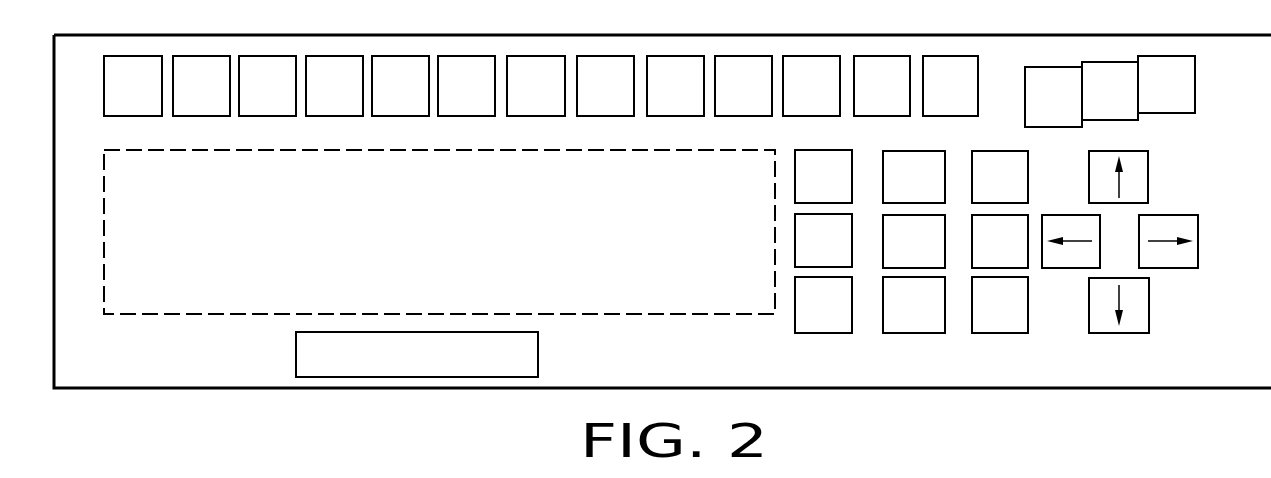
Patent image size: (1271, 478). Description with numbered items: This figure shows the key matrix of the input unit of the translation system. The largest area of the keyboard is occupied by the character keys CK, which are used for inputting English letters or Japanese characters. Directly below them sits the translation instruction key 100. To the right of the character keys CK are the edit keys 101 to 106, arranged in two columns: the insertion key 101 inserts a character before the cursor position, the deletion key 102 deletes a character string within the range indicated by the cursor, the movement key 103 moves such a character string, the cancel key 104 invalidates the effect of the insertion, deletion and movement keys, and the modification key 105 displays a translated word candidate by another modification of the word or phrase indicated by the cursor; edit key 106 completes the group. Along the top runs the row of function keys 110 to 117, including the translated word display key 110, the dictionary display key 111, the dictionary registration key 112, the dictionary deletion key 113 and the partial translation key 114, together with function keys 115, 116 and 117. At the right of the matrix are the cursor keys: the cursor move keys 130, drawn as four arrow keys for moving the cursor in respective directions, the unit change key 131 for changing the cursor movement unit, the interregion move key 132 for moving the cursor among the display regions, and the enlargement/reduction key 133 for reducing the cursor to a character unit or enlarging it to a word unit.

The translation instruction key 100 is at (417, 354).
The insertion key 101 is at (823, 305).
The deletion key 102 is at (823, 240).
The movement key 103 is at (823, 176).
The cancel key 104 is at (914, 305).
The modification key 105 is at (914, 241).
The edit key 106 is at (914, 177).
The translated word display key 110 is at (133, 86).
The dictionary display key 111 is at (201, 86).
The dictionary registration key 112 is at (267, 86).
The dictionary deletion key 113 is at (334, 86).
The partial translation key 114 is at (400, 86).
The function key 115 is at (466, 86).
The function key 116 is at (536, 86).
The function key 117 is at (605, 86).
The cursor move keys 130 is at (1145, 368).
The unit change key 131 is at (1053, 97).
The interregion move key 132 is at (1110, 91).
The enlargement/reduction key 133 is at (1166, 84).
The character keys CK is at (168, 316).